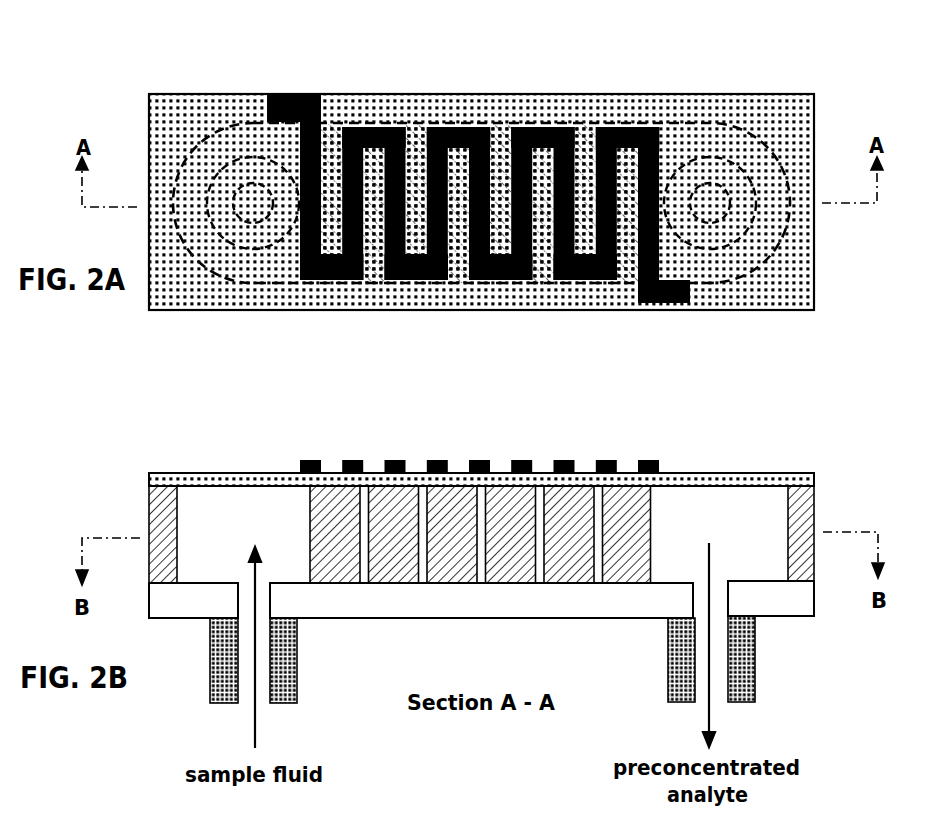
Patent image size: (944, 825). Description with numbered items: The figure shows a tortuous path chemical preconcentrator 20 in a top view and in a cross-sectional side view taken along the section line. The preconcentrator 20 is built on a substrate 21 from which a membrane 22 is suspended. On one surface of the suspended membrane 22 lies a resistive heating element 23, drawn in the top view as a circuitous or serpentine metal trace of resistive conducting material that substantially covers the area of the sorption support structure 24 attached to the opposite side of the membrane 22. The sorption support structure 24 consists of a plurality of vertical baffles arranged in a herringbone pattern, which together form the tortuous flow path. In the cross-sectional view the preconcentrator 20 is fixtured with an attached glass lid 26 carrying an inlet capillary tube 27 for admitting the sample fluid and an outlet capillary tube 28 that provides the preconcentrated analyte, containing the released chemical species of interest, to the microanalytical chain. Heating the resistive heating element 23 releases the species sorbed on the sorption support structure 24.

In FIG. 2A, the tortuous path chemical preconcentrator 20 is at (182, 26).
In FIG. 2B, the substrate 21 is at (815, 500).
In FIG. 2A, the membrane 22 is at (797, 130).
In FIG. 2B, the membrane 22 is at (716, 473).
In FIG. 2A, the resistive heating element 23 is at (458, 123).
In FIG. 2B, the resistive heating element 23 is at (393, 461).
In FIG. 2B, the sorption support structure 24 is at (651, 563).
In FIG. 2B, the glass lid 26 is at (765, 617).
In FIG. 2B, the inlet capillary tube 27 is at (208, 672).
In FIG. 2B, the outlet capillary tube 28 is at (753, 665).